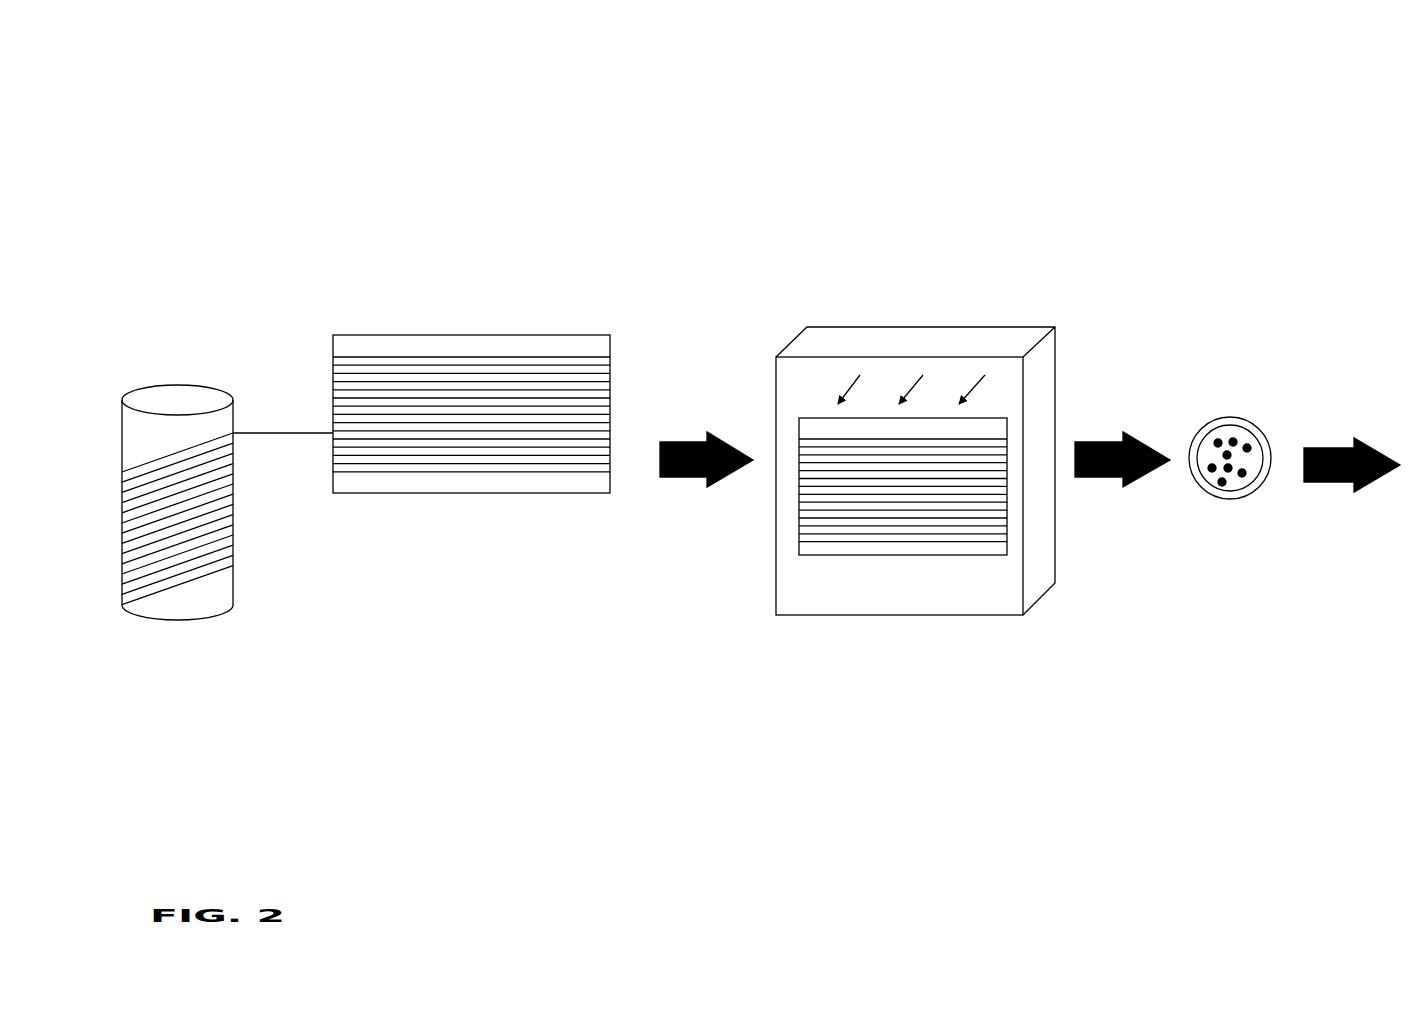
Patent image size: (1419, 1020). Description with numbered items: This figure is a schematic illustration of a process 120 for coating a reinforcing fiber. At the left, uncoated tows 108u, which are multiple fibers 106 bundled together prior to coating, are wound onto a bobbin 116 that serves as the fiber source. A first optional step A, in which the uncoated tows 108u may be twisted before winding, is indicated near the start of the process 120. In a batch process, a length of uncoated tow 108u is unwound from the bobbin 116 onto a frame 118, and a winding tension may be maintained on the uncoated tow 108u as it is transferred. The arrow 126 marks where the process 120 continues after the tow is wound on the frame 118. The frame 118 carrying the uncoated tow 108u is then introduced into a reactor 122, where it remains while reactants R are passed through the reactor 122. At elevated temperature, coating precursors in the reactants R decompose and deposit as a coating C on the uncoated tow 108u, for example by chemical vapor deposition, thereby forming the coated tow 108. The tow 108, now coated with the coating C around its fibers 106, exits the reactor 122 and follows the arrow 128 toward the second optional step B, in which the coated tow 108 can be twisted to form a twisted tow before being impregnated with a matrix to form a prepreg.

The process 120 is at (262, 52).
The first optional step A is at (278, 366).
The bobbin 116 is at (174, 398).
The uncoated tow 108u is at (202, 540).
The frame 118 is at (394, 347).
The arrow 126 is at (693, 478).
The reactor 122 is at (977, 338).
The reactants R is at (914, 383).
The tow 108 is at (1271, 402).
The coating C is at (1217, 424).
The fiber 106 is at (1222, 483).
The arrow 128 is at (1347, 483).
The second optional step B is at (1410, 424).